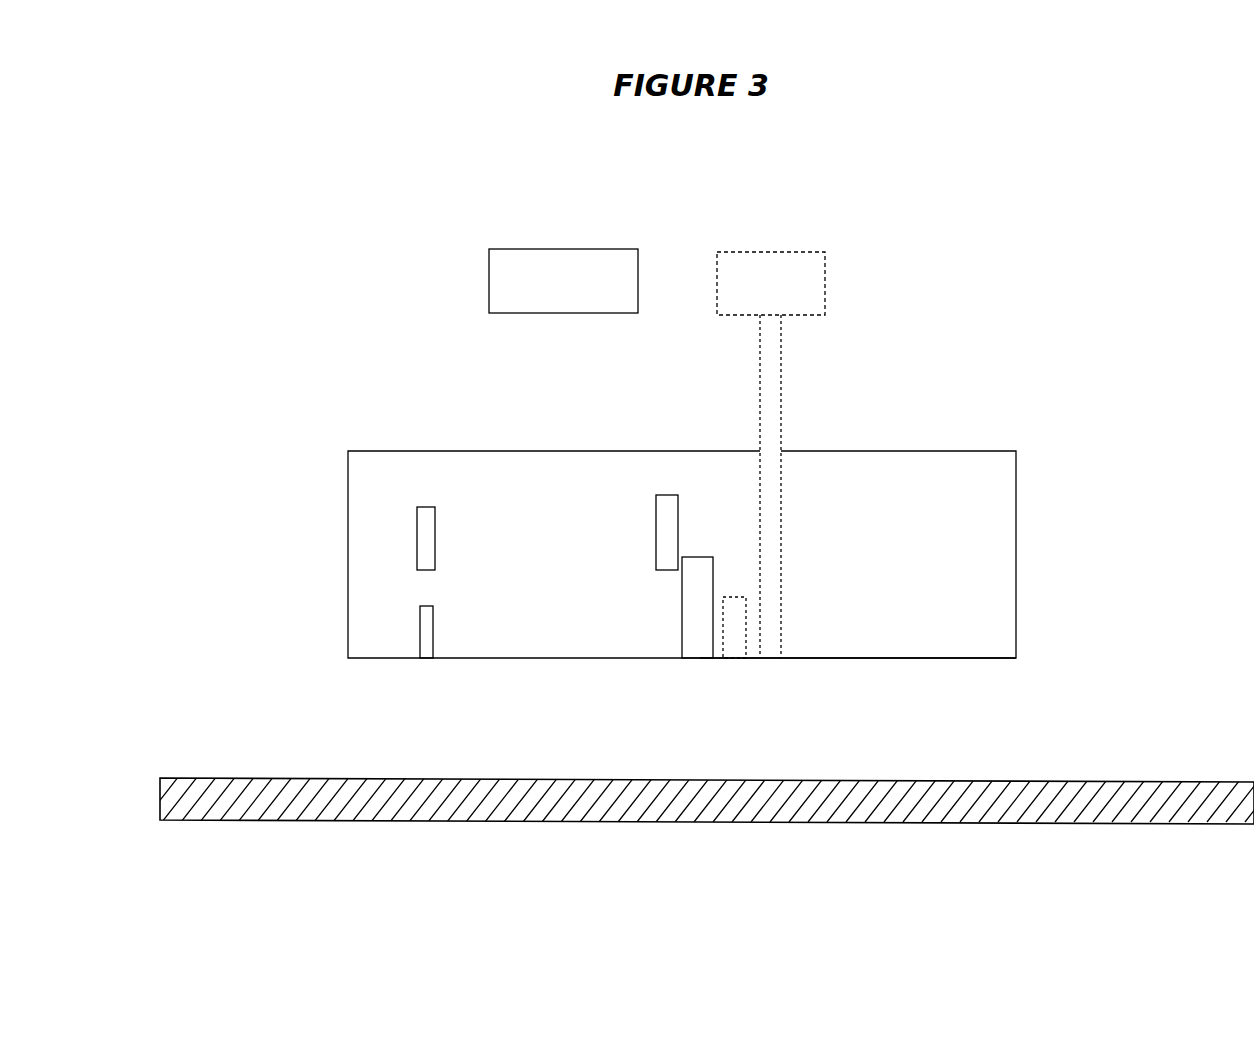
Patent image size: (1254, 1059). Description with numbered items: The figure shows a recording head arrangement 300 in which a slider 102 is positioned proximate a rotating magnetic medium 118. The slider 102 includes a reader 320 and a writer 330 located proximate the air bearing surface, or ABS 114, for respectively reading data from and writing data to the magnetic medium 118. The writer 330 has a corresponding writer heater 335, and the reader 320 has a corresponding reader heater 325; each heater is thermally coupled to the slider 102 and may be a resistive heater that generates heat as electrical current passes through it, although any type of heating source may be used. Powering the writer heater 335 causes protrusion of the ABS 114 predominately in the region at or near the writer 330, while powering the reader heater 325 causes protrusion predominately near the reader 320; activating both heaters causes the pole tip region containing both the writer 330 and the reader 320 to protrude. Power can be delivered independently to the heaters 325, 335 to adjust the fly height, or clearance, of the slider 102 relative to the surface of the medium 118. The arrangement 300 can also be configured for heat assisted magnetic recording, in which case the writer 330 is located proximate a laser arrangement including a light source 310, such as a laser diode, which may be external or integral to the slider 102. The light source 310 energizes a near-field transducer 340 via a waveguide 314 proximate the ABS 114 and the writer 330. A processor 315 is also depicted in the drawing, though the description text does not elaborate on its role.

The recording head arrangement 300 is at (374, 150).
The slider 102 is at (1046, 424).
The ABS 114 is at (834, 678).
The rotating magnetic medium 118 is at (1215, 780).
The light source 310 is at (826, 283).
The waveguide 314 is at (782, 390).
The processor 315 is at (489, 279).
The reader 320 is at (434, 632).
The reader heater 325 is at (436, 540).
The writer 330 is at (681, 615).
The writer heater 335 is at (655, 540).
The near-field transducer 340 is at (734, 597).